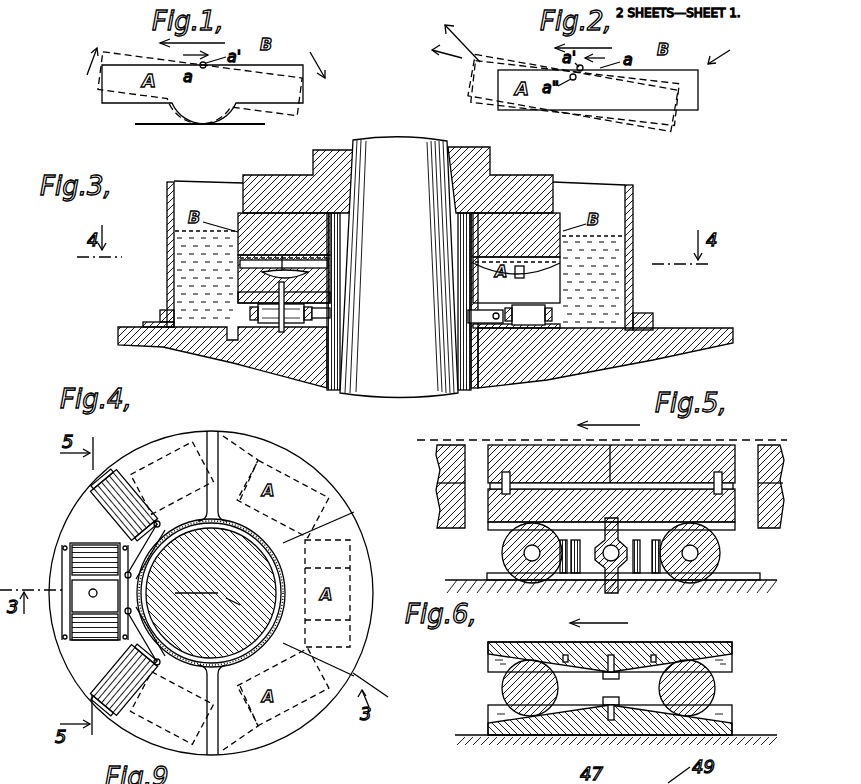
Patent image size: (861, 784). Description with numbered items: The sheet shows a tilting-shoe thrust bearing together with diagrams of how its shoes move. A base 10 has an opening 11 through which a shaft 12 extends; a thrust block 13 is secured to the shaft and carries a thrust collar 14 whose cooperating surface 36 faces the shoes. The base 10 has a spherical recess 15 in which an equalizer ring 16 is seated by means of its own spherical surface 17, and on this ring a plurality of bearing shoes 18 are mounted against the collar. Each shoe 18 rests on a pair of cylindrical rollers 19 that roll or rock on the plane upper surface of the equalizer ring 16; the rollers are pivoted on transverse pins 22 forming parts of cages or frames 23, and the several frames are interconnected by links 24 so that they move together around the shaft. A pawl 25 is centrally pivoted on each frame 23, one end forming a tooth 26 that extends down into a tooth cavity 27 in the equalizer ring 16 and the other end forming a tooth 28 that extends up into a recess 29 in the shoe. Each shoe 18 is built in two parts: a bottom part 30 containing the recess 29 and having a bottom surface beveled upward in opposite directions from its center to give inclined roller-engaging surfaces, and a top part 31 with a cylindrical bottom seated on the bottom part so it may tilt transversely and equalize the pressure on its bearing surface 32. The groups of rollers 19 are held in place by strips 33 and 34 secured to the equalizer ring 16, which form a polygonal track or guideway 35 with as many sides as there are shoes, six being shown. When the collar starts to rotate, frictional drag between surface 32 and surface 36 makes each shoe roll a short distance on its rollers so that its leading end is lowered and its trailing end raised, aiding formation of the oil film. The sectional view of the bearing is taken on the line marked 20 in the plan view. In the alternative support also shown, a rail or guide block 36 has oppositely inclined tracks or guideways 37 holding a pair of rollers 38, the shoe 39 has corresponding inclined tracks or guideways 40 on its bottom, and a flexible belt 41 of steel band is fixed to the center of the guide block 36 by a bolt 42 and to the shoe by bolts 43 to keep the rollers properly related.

In FIG. 3, the base 10 is at (660, 340).
In FIG. 3, the opening 11 is at (334, 391).
In FIG. 3, the shaft 12 is at (497, 182).
In FIG. 4, the shaft 12 is at (265, 582).
In FIG. 3, the thrust block 13 is at (282, 180).
In FIG. 3, the thrust collar 14 is at (238, 232).
In FIG. 3, the spherical recess 15 is at (533, 357).
In FIG. 3, the equalizer ring 16 is at (523, 360).
In FIG. 3, the spherical surface 17 is at (527, 363).
In FIG. 3, the bearing shoes 18 is at (550, 297).
In FIG. 3, the cylindrical rollers 19 is at (522, 327).
In FIG. 5, the cylindrical rollers 19 is at (502, 553).
In FIG. 3, the bearing 20 is at (313, 330).
In FIG. 3, the transverse pins 22 is at (256, 313).
In FIG. 4, the transverse pins 22 is at (72, 548).
In FIG. 3, the cages or frames 23 is at (250, 322).
In FIG. 4, the cages or frames 23 is at (67, 575).
In FIG. 3, the links 24 is at (332, 306).
In FIG. 4, the links 24 is at (140, 547).
In FIG. 3, the pawl 25 is at (332, 285).
In FIG. 4, the pawl 25 is at (88, 596).
In FIG. 5, the pawl 25 is at (578, 568).
In FIG. 3, the tooth 26 is at (263, 330).
In FIG. 5, the tooth 26 is at (607, 573).
In FIG. 3, the tooth cavity 27 is at (287, 333).
In FIG. 5, the tooth cavity 27 is at (614, 590).
In FIG. 3, the tooth 28 is at (332, 270).
In FIG. 4, the tooth 28 is at (82, 600).
In FIG. 5, the tooth 28 is at (614, 517).
In FIG. 3, the recess 29 is at (262, 286).
In FIG. 5, the recess 29 is at (677, 446).
In FIG. 3, the bottom part 30 is at (237, 283).
In FIG. 5, the bottom part 30 is at (488, 524).
In FIG. 3, the top part 31 is at (237, 263).
In FIG. 5, the top part 31 is at (710, 444).
In FIG. 3, the bearing surface 32 is at (332, 247).
In FIG. 5, the bearing surface 32 is at (540, 450).
In FIG. 3, the strip 33 is at (341, 333).
In FIG. 5, the strip 33 is at (725, 583).
In FIG. 3, the strip 34 is at (232, 340).
In FIG. 4, the strip 34 is at (67, 537).
In FIG. 4, the polygonal track or guideway 35 is at (88, 503).
In FIG. 3, the rail or guide block 36 is at (515, 255).
In FIG. 6, the rail or guide block 36 is at (525, 734).
In FIG. 6, the inclined tracks or guideways 37 is at (490, 717).
In FIG. 6, the rollers 38 is at (501, 688).
In FIG. 6, the shoe 39 is at (731, 644).
In FIG. 6, the inclined tracks or guideways 40 is at (490, 661).
In FIG. 6, the flexible belt 41 is at (593, 713).
In FIG. 6, the bolt 42 is at (618, 697).
In FIG. 6, the bolts 43 is at (625, 658).